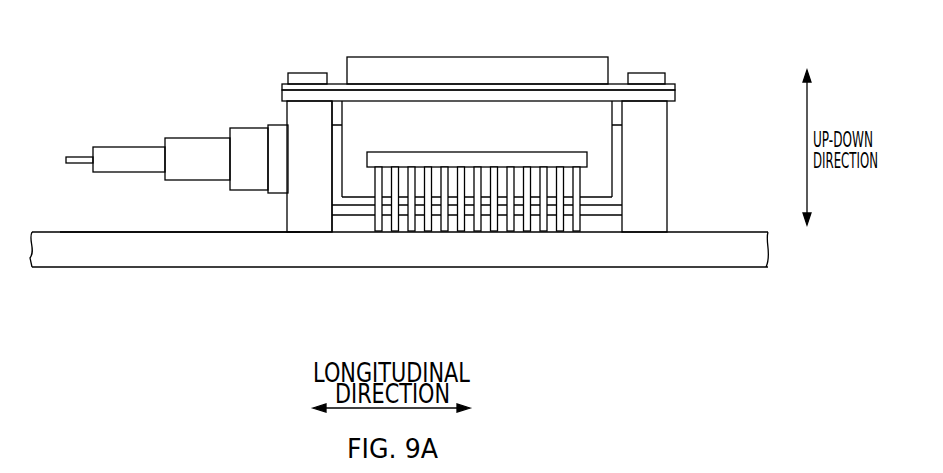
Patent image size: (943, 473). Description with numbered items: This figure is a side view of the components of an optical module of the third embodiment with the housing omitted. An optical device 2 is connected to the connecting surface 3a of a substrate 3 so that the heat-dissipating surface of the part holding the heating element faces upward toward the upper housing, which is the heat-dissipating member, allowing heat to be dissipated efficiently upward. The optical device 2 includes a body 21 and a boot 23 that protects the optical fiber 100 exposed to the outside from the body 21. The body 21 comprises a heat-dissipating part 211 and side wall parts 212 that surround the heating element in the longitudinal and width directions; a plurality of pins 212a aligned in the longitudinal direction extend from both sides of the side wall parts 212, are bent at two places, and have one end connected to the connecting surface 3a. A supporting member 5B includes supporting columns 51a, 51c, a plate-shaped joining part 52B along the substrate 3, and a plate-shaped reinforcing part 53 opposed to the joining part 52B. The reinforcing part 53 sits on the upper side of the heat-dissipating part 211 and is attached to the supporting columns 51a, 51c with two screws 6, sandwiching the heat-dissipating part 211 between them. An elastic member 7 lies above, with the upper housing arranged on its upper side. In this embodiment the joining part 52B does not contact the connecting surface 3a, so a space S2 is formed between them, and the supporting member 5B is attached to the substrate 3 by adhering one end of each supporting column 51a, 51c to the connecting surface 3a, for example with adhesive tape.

The optical device 2 is at (187, 107).
The substrate 3 is at (122, 253).
The connecting surface 3a is at (137, 232).
The supporting member 5B is at (694, 208).
The screws 6 is at (305, 73).
The elastic member 7 is at (472, 65).
The body 21 is at (532, 208).
The boot 23 is at (177, 205).
The supporting column 51a is at (293, 216).
The supporting column 51c is at (657, 166).
The joining part 52B is at (350, 218).
The reinforcing part 53 is at (283, 88).
The optical fiber 100 is at (82, 156).
The heat-dissipating part 211 is at (677, 99).
The side wall parts 212 is at (535, 214).
The pins 212a is at (428, 224).
The space S2 is at (595, 240).